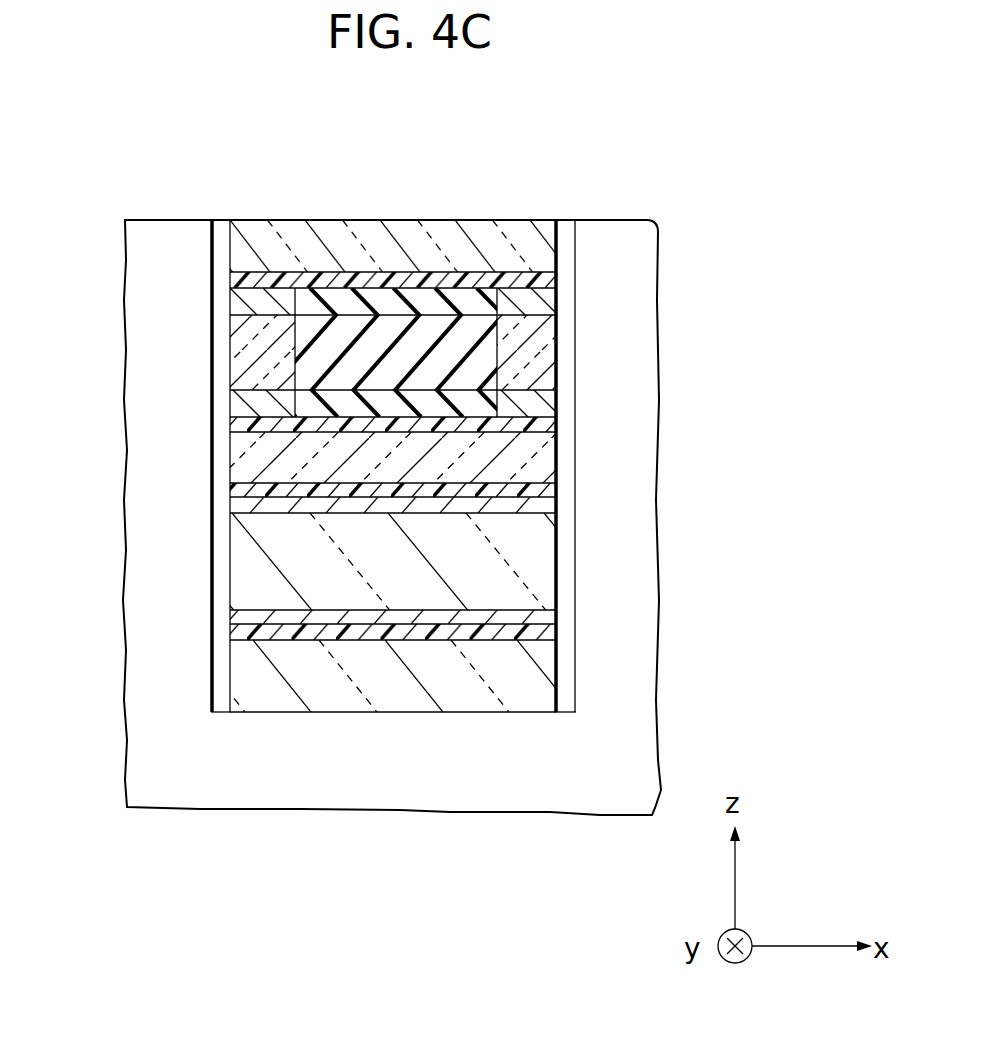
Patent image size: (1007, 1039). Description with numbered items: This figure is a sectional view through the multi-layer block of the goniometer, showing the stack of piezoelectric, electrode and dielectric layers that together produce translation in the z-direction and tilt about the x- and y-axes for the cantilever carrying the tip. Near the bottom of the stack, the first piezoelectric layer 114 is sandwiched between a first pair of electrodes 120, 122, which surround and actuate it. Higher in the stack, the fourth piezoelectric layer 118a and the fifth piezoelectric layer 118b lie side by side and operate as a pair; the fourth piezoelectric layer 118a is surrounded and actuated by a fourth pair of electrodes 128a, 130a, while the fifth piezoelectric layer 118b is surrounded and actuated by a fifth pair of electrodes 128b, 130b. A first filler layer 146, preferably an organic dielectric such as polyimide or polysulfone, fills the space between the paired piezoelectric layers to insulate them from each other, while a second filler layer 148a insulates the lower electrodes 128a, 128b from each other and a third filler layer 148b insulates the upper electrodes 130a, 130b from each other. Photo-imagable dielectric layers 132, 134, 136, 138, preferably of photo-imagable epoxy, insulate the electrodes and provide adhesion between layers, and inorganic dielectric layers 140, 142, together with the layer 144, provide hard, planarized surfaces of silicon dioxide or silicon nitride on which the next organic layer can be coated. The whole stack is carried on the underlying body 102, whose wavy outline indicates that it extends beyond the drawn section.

The substrate 102 is at (390, 799).
The first piezoelectric layer 114 is at (538, 575).
The fourth piezoelectric layer 118a is at (238, 330).
The fifth piezoelectric layer 118b is at (550, 340).
The electrode 120 is at (547, 618).
The electrode 122 is at (547, 506).
The electrode 128a is at (236, 407).
The electrode 128b is at (540, 408).
The electrode 130a is at (240, 300).
The electrode 130b is at (543, 306).
The photo-imagable dielectric layer 132 is at (233, 635).
The photo-imagable dielectric layer 134 is at (235, 490).
The photo-imagable dielectric layer 136 is at (550, 430).
The photo-imagable dielectric layer 138 is at (542, 283).
The inorganic dielectric layer 140 is at (538, 683).
The inorganic dielectric layer 142 is at (522, 461).
The dielectric layer 144 is at (565, 222).
The first filler layer 146 is at (313, 350).
The second filler layer 148a is at (233, 450).
The third filler layer 148b is at (415, 297).